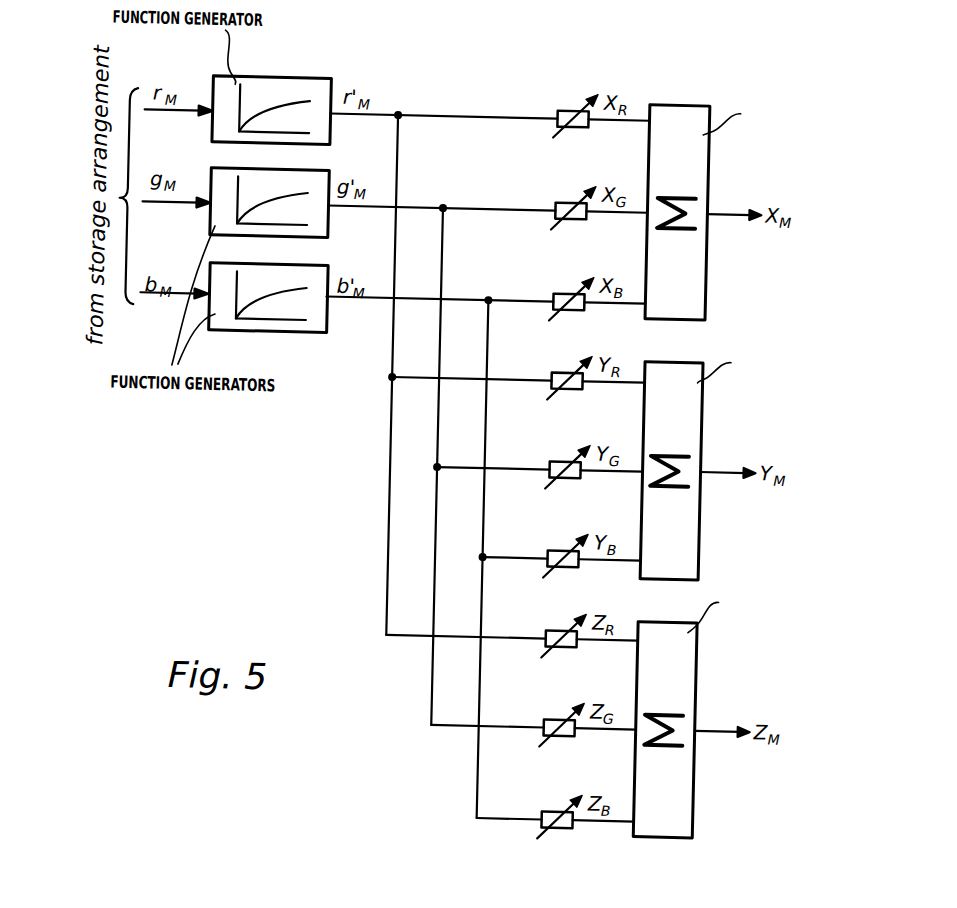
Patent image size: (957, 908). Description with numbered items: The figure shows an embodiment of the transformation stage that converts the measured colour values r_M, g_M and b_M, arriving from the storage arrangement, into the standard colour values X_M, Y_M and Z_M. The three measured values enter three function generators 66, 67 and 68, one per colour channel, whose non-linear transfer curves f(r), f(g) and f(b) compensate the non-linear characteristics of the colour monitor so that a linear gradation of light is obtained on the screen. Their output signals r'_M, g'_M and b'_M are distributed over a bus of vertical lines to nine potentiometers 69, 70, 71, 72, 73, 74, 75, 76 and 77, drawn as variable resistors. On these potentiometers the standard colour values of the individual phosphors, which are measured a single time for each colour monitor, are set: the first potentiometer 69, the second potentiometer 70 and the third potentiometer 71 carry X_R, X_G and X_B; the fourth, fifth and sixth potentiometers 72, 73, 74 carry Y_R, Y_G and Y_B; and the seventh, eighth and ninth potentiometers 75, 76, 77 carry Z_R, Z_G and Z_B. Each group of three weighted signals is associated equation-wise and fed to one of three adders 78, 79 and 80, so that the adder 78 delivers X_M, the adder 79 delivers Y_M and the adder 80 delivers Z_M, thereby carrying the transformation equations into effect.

The function generator 66 is at (260, 93).
The function generator 67 is at (311, 178).
The function generator 68 is at (221, 325).
The potentiometer 69 is at (553, 126).
The potentiometer 70 is at (553, 203).
The potentiometer 71 is at (553, 295).
The potentiometer 72 is at (551, 372).
The potentiometer 73 is at (551, 460).
The potentiometer 74 is at (551, 549).
The potentiometer 75 is at (551, 629).
The potentiometer 76 is at (551, 718).
The potentiometer 77 is at (557, 810).
The adder 78 is at (702, 161).
The adder 79 is at (701, 390).
The adder 80 is at (697, 648).